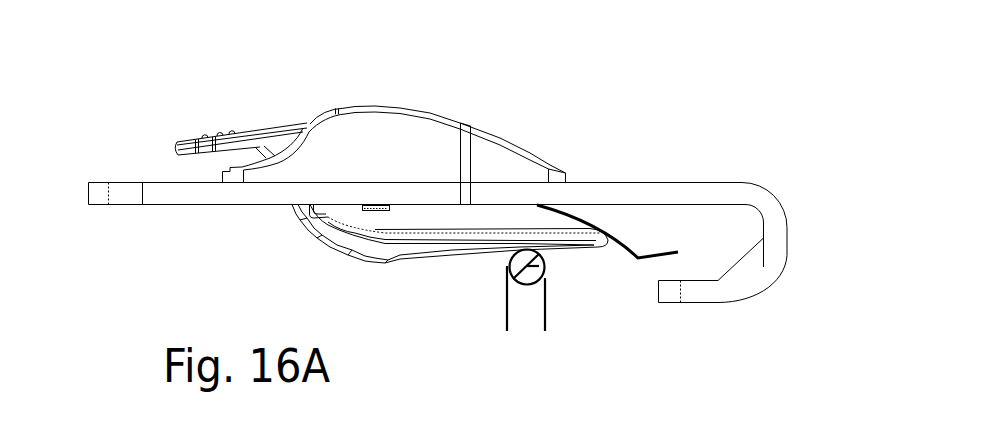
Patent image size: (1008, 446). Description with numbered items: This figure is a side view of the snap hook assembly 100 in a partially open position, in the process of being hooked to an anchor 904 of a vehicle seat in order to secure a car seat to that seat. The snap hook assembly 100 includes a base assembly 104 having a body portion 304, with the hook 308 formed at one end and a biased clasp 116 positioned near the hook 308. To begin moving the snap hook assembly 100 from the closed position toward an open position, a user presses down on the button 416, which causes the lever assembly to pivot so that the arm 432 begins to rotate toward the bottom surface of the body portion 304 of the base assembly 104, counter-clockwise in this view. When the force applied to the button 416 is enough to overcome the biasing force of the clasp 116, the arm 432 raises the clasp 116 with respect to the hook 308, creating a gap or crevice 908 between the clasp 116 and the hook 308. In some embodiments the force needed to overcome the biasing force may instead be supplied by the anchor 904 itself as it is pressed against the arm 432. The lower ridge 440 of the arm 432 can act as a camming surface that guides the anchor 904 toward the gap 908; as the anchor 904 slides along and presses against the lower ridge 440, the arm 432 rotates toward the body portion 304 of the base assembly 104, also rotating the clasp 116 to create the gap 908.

The snap hook assembly 100 is at (84, 111).
The base assembly 104 is at (790, 178).
The clasp 116 is at (661, 250).
The body portion 304 is at (595, 197).
The hook 308 is at (773, 250).
The button 416 is at (207, 111).
The arm 432 is at (443, 238).
The lower ridge 440 is at (395, 252).
The anchor 904 is at (545, 266).
The gap 908 is at (647, 271).